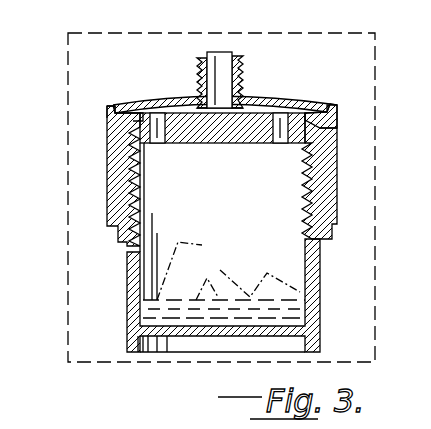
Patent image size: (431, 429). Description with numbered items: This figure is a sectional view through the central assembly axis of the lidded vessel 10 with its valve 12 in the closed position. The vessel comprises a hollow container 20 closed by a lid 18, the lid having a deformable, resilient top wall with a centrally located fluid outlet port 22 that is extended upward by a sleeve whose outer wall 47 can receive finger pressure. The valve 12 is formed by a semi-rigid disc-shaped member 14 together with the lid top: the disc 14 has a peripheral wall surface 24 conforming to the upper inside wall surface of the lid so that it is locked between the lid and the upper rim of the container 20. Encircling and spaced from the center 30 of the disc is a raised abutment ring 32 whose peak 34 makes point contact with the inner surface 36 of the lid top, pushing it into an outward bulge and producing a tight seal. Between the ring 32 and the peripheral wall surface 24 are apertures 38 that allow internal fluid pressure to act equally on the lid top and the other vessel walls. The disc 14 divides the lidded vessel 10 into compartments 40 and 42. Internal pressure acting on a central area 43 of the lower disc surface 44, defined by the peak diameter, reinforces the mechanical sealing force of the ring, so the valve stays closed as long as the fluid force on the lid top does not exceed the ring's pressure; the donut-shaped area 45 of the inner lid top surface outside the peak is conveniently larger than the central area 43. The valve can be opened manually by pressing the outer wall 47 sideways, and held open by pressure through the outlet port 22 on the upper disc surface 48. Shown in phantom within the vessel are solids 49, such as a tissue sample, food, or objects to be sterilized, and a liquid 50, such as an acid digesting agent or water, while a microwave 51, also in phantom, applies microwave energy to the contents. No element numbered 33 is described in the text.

The lidded vessel 10 is at (100, 178).
The valve 12 is at (108, 103).
The disc-shaped member 14 is at (210, 150).
The lid 18 is at (342, 165).
The container 20 is at (326, 297).
The fluid outlet port 22 is at (219, 53).
The peripheral wall surface 24 is at (322, 114).
The center 30 is at (200, 69).
The abutment ring 32 is at (248, 103).
The lid left flange 33 is at (116, 100).
The peak 34 is at (199, 103).
The inner surface 36 is at (165, 112).
The apertures 38 is at (278, 146).
The compartment 40 is at (308, 99).
The compartment 42 is at (210, 211).
The central area 43 is at (229, 146).
The lower disc surface 44 is at (193, 146).
The donut-shaped area 45 is at (292, 105).
The outer wall 47 is at (42, 421).
The upper disc surface 48 is at (225, 106).
The solids 49 is at (206, 264).
The liquid 50 is at (150, 312).
The microwave 51 is at (66, 258).